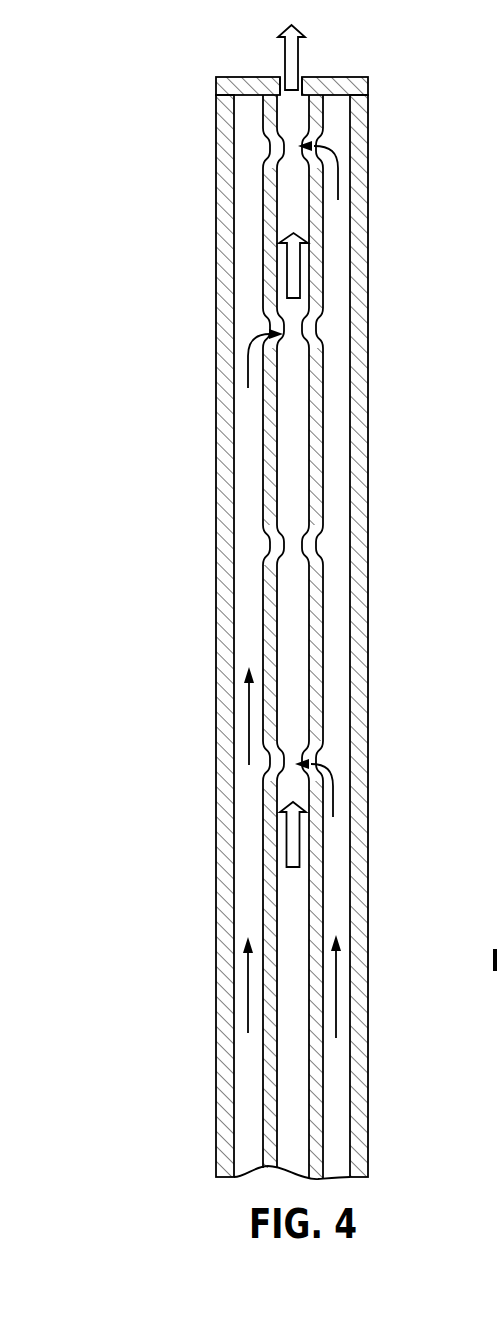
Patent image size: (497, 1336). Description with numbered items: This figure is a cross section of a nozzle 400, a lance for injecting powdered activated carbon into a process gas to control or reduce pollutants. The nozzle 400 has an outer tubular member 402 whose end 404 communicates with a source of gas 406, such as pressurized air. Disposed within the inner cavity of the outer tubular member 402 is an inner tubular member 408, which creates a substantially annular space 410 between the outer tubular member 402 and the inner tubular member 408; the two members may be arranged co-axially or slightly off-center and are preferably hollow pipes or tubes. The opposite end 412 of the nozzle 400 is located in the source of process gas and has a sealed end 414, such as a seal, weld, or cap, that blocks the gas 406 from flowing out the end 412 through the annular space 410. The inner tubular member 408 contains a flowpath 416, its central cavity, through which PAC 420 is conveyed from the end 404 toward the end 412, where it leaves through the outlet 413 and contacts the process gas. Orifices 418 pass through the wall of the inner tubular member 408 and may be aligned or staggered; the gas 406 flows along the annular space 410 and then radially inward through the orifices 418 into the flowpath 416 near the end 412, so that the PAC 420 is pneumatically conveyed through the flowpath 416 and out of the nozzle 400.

The nozzle 400 is at (408, 360).
The outer tubular member 402 is at (216, 208).
The end 404 is at (198, 1168).
The gas 406 is at (248, 1005).
The inner tubular member 408 is at (322, 1102).
The annular space 410 is at (250, 1097).
The end 412 is at (398, 97).
The outlet 413 is at (289, 103).
The sealed end 414 is at (345, 77).
The flowpath 416 is at (302, 1080).
The orifices 418 is at (256, 327).
The PAC 420 is at (285, 58).